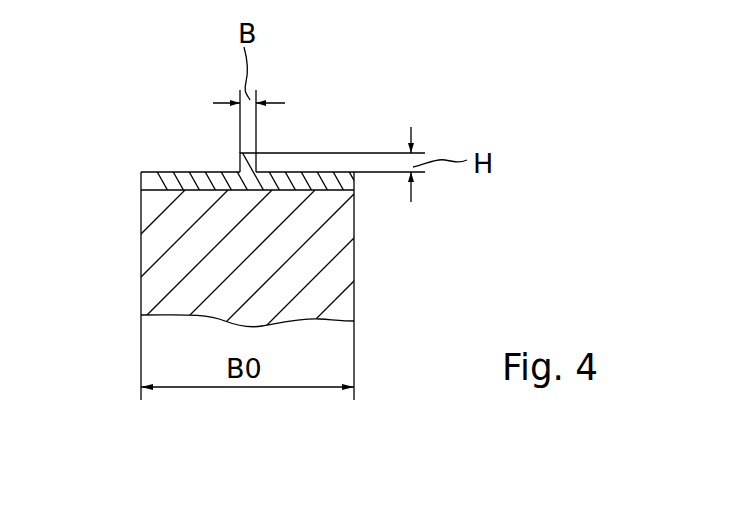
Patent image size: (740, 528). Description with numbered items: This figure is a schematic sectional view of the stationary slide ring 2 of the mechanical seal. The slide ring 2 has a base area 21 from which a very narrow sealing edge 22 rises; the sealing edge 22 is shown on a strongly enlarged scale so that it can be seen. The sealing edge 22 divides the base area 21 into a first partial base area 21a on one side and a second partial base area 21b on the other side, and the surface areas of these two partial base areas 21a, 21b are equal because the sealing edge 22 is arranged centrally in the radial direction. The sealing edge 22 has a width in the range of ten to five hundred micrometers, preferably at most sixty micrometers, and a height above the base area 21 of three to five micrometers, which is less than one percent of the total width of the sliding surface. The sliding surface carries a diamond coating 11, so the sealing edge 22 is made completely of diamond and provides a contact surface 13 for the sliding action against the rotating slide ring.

The stationary slide ring 2 is at (343, 270).
The diamond coating 11 is at (157, 183).
The base area 21 is at (180, 150).
The first partial base area 21a is at (308, 172).
The second partial base area 21b is at (168, 172).
The contact surface 13 is at (249, 149).
The sealing edge 22 is at (241, 162).